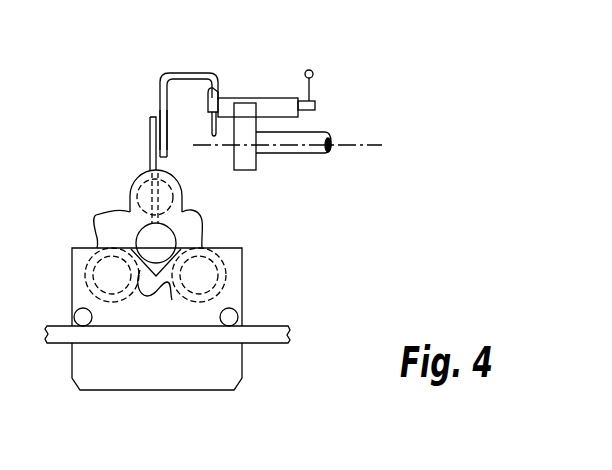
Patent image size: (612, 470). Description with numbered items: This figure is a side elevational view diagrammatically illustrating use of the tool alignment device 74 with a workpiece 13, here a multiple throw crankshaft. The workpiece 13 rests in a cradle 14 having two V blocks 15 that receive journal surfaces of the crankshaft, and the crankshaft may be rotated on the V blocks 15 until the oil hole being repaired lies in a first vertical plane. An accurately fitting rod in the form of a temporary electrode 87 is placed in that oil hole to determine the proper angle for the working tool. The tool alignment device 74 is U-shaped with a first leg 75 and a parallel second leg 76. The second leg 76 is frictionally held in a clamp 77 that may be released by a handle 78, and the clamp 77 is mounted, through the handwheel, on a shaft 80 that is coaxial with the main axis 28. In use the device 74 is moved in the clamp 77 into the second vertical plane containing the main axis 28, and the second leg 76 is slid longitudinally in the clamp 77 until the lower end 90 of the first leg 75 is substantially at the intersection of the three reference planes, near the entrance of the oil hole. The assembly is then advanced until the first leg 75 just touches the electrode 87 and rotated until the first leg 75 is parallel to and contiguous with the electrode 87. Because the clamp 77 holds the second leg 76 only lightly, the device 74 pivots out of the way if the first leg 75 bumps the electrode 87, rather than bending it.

The workpiece 13 is at (195, 223).
The cradle 14 is at (237, 277).
The V blocks 15 is at (172, 300).
The main axis 28 is at (373, 145).
The tool alignment device 74 is at (187, 74).
The first leg 75 is at (162, 97).
The second leg 76 is at (211, 124).
The clamp 77 is at (211, 90).
The handle 78 is at (313, 73).
The shaft 80 is at (295, 153).
The electrode 87 is at (150, 123).
The lower end 90 is at (167, 157).